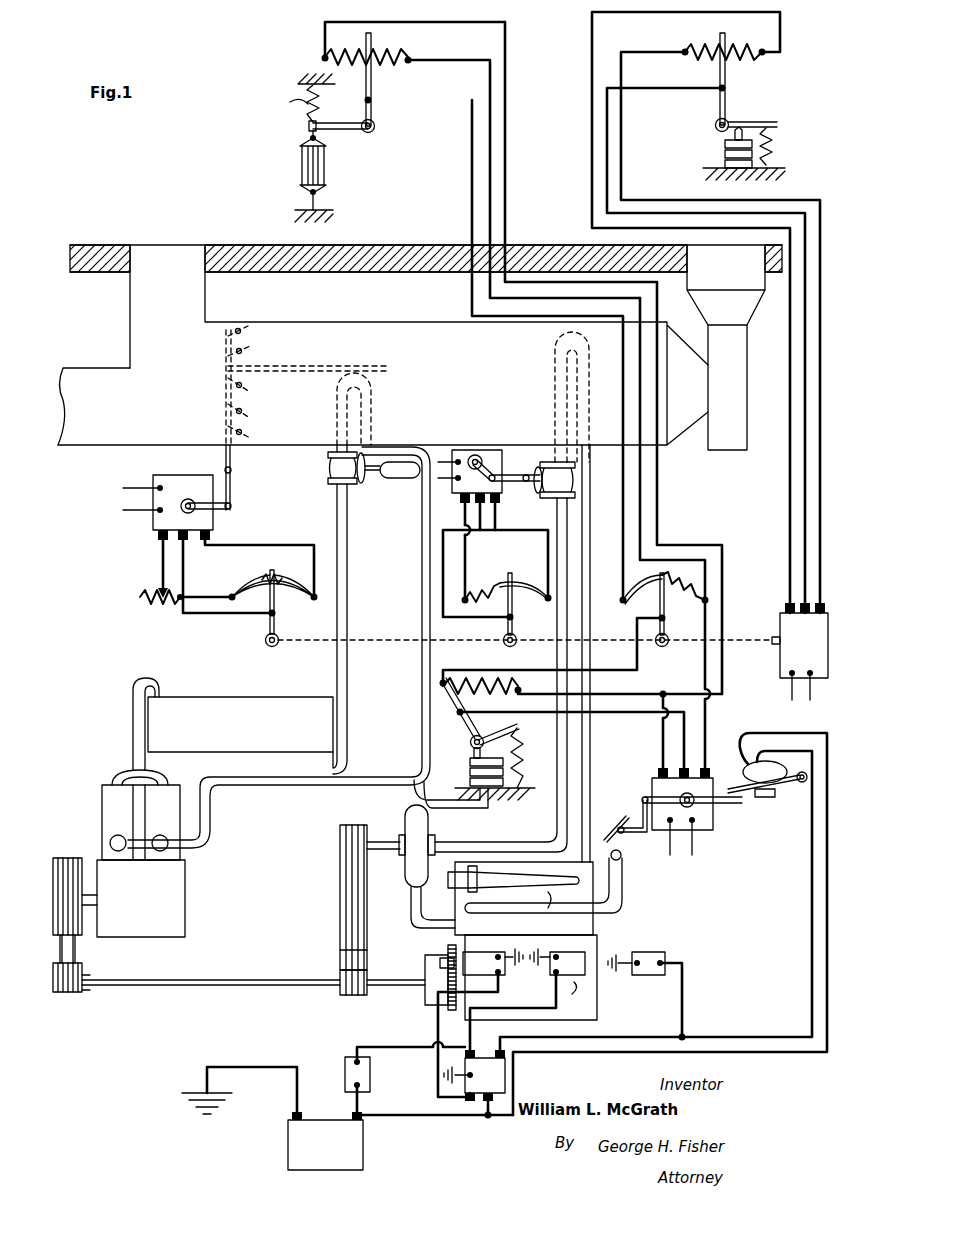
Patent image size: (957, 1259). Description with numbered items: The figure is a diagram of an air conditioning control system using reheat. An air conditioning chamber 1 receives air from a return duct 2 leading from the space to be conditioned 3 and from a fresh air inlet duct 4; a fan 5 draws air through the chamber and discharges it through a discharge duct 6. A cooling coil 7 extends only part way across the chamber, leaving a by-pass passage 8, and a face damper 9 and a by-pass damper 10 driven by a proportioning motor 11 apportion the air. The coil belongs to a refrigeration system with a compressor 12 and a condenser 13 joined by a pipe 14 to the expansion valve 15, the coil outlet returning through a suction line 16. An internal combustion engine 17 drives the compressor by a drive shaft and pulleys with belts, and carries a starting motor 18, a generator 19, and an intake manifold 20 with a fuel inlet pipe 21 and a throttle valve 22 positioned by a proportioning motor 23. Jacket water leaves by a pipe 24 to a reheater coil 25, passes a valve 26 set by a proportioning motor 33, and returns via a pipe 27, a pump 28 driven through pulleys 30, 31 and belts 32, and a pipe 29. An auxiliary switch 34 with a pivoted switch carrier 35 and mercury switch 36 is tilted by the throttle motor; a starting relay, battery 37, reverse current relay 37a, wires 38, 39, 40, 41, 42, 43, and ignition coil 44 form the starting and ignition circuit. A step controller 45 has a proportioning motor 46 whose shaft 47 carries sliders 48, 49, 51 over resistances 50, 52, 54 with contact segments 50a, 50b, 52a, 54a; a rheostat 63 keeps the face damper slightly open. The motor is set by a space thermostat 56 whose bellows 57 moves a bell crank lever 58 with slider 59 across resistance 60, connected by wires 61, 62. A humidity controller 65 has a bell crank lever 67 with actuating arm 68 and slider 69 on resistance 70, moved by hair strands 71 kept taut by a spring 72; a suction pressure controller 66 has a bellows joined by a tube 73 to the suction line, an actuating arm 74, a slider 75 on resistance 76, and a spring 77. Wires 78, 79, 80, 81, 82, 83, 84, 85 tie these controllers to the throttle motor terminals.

The air conditioning chamber 1 is at (310, 322).
The return duct 2 is at (130, 292).
The space to be conditioned 3 is at (155, 187).
The fresh air inlet duct 4 is at (92, 350).
The fan 5 is at (745, 394).
The discharge duct 6 is at (755, 300).
The cooling coil 7 is at (337, 408).
The by-pass passage 8 is at (336, 354).
The face damper 9 is at (246, 408).
The by-pass damper 10 is at (244, 350).
The proportioning motor 11 is at (182, 476).
The compressor 12 is at (100, 810).
The condenser 13 is at (232, 700).
The pipe 14 is at (347, 598).
The expansion valve 15 is at (328, 466).
The suction line 16 is at (422, 558).
The internal combustion engine 17 is at (593, 926).
The starting motor 18 is at (294, 958).
The generator 19 is at (66, 842).
The intake manifold 20 is at (82, 978).
The fuel inlet pipe 21 is at (70, 946).
The throttle valve 22 is at (624, 840).
The proportioning motor 23 is at (713, 826).
The pipe 24 is at (582, 754).
The reheater coil 25 is at (555, 398).
The valve 26 is at (540, 466).
The pipe 27 is at (557, 750).
The pump 28 is at (406, 820).
The pipe 29 is at (411, 918).
The pulley 30 is at (340, 836).
The pulley 31 is at (336, 972).
The belts 32 is at (340, 896).
The proportioning motor 33 is at (488, 448).
The auxiliary switch 34 is at (778, 800).
The switch carrier 35 is at (806, 784).
The mercury switch 36 is at (784, 744).
The storage battery 37 is at (272, 1118).
The reverse current relay 37a is at (374, 1070).
The wire 38 is at (420, 1122).
The wire 39 is at (438, 1030).
The wire 40 is at (538, 1008).
The wire 41 is at (716, 1022).
The wire 42 is at (752, 1052).
The wire 43 is at (688, 1008).
The ignition coil 44 is at (654, 958).
The step controller 45 is at (758, 604).
The proportioning motor 46 is at (780, 660).
The operating shaft 47 is at (750, 636).
The slider 48 is at (280, 618).
The slider 49 is at (520, 610).
The resistance 50 is at (266, 572).
The contact segment 50a is at (246, 586).
The contact segment 50b is at (300, 588).
The slider 51 is at (664, 610).
The resistance 52 is at (488, 576).
The contact segment 52a is at (540, 582).
The resistance 54 is at (694, 580).
The contact segment 54a is at (640, 592).
The space thermostat 56 is at (688, 118).
The bellows 57 is at (725, 152).
The bell crank lever 58 is at (728, 120).
The slider 59 is at (718, 70).
The resistance 60 is at (710, 44).
The wire 61 is at (666, 76).
The wire 62 is at (638, 30).
The rheostat 63 is at (136, 592).
The humidity controller 65 is at (396, 158).
The suction pressure controller 66 is at (434, 728).
The bell crank lever 67 is at (375, 126).
The actuating arm 68 is at (342, 130).
The slider 69 is at (371, 78).
The resistance 70 is at (376, 43).
The humidity responsive device 71 is at (300, 168).
The spring 72 is at (470, 770).
The tube 73 is at (442, 806).
The actuating arm 74 is at (518, 722).
The slider 75 is at (474, 744).
The resistance 76 is at (492, 672).
The spring 77 is at (520, 772).
The wire 78 is at (640, 716).
The wire 79 is at (612, 658).
The wire 80 is at (623, 558).
The wire 81 is at (657, 496).
The wire 82 is at (705, 712).
The wire 83 is at (470, 40).
The wire 84 is at (663, 736).
The wire 85 is at (622, 696).